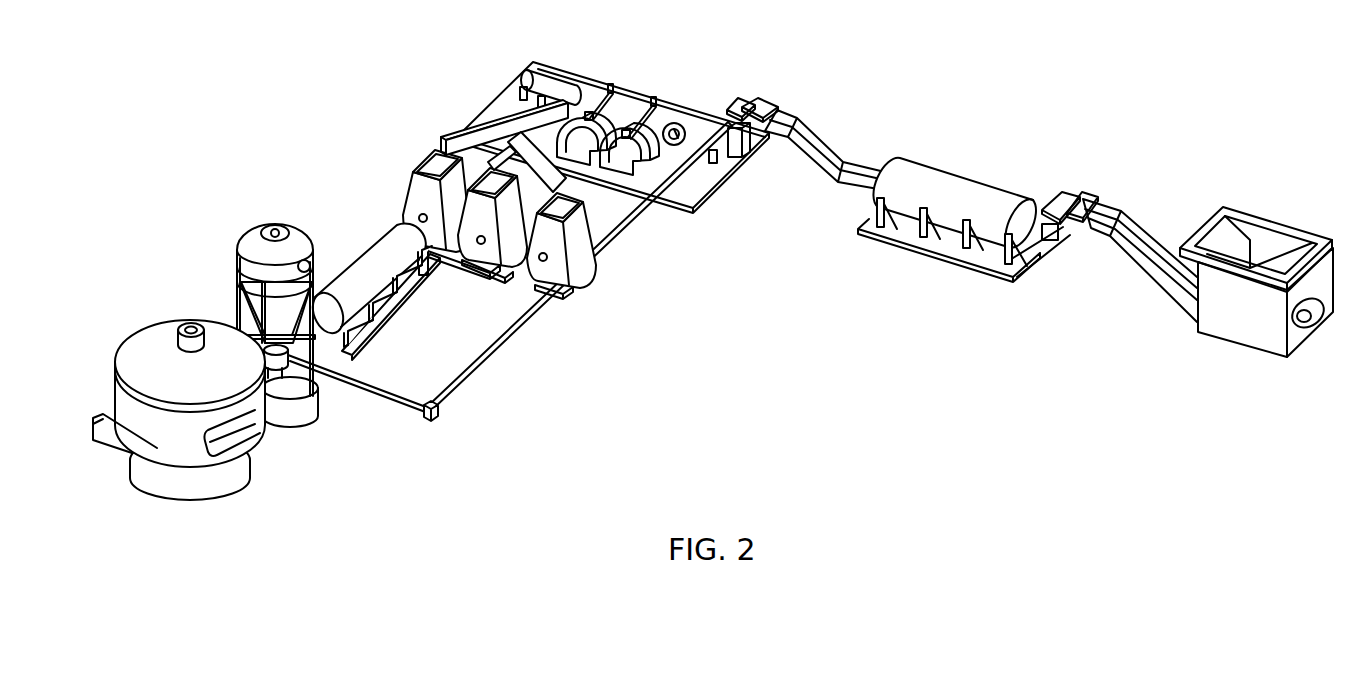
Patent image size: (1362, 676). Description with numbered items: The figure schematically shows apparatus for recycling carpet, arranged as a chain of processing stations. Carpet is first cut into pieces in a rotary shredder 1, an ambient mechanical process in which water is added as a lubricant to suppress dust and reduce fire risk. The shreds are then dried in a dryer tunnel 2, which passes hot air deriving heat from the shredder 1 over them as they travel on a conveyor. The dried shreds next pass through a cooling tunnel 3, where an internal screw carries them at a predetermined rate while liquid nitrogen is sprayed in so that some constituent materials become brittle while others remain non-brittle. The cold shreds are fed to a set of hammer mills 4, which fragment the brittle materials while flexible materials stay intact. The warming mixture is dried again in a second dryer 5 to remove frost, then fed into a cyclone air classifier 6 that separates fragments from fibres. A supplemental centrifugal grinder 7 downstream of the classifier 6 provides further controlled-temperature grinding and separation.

The rotary shredder 1 is at (1283, 222).
The dryer tunnel 2 is at (973, 180).
The cooling tunnel 3 is at (632, 97).
The hammer mills 4 is at (410, 183).
The second dryer 5 is at (393, 262).
The cyclone air classifier 6 is at (237, 262).
The supplemental centrifugal grinder 7 is at (132, 333).